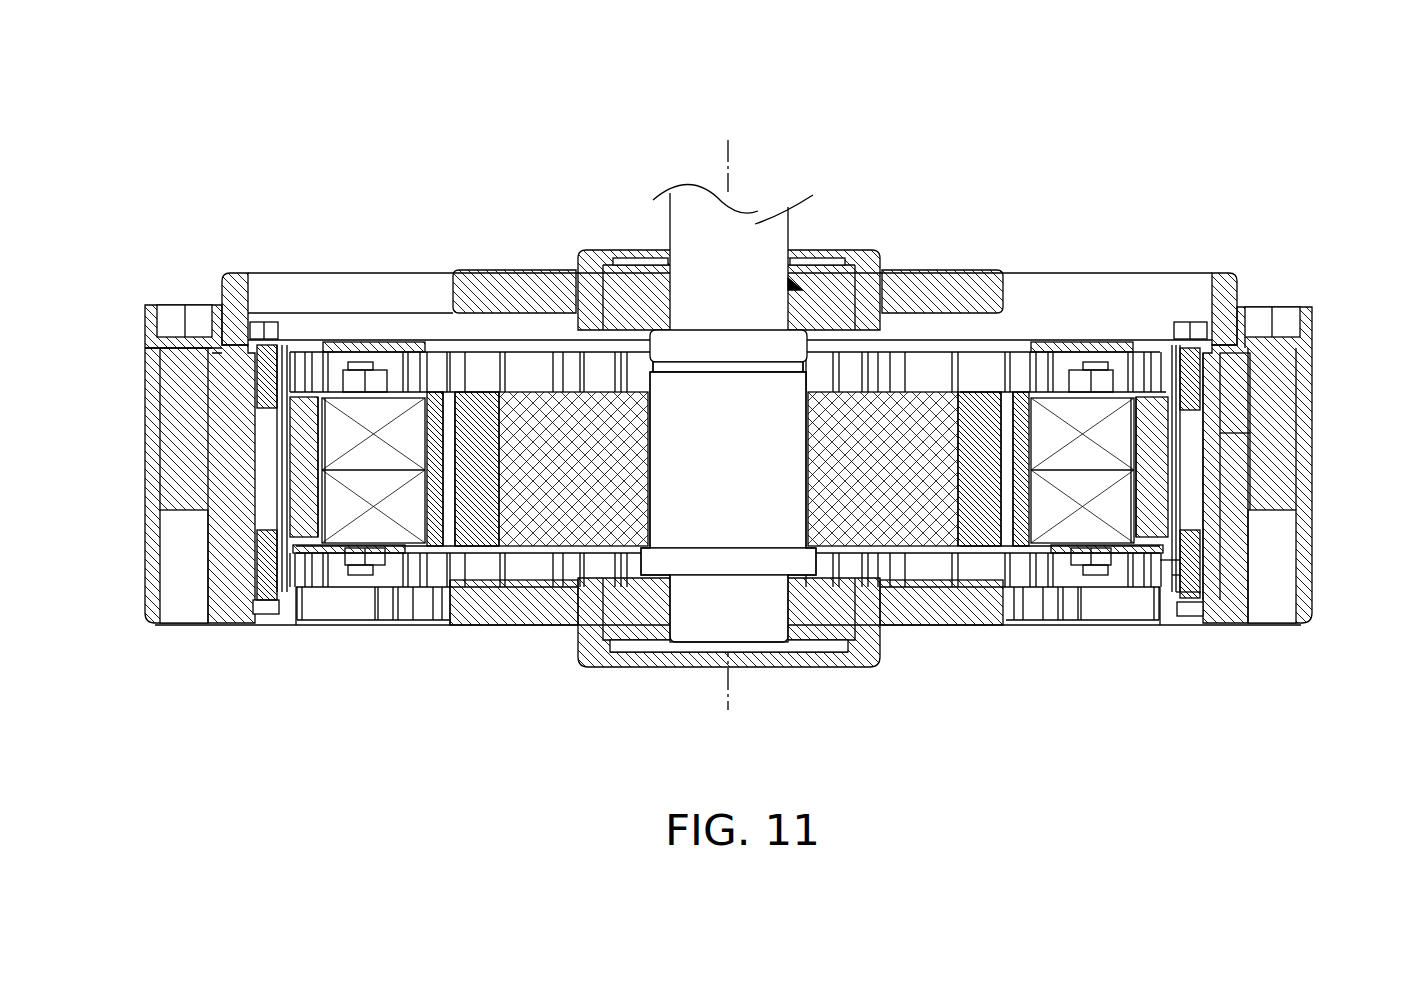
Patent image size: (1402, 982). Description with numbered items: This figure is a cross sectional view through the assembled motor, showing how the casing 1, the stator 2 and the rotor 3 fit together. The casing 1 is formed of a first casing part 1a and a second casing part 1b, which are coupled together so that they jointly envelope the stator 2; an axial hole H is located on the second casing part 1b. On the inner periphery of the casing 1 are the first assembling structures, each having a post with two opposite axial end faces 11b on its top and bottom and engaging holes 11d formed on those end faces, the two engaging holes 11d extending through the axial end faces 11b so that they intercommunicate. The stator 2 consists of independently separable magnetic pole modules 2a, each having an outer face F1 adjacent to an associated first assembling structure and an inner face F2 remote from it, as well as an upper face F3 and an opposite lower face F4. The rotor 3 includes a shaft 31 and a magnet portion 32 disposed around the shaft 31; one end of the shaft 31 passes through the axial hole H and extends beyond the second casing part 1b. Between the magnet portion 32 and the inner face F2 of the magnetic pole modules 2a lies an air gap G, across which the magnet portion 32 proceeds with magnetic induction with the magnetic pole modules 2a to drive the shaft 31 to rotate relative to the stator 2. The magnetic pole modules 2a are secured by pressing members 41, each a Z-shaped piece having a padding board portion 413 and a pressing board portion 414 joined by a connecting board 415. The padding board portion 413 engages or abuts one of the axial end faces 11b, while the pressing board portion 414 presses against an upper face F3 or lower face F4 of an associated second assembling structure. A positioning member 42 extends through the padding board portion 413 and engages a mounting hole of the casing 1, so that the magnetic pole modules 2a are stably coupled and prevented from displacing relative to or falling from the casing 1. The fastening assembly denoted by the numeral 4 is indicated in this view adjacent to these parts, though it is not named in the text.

The casing 1 is at (52, 362).
The first casing part 1a is at (150, 468).
The second casing part 1b is at (150, 375).
The axial end face 11b is at (1222, 340).
The engaging hole 11d is at (1200, 386).
The stator 2 is at (432, 318).
The magnetic pole module 2a is at (371, 328).
The rotor 3 is at (928, 372).
The shaft 31 is at (783, 216).
The magnet portion 32 is at (477, 398).
The circuit board 4 is at (1174, 305).
The pressing member 41 is at (1180, 710).
The padding board portion 413 is at (1176, 594).
The pressing board portion 414 is at (1158, 562).
The connecting board 415 is at (1168, 576).
The positioning member 42 is at (1195, 565).
The outer face F1 is at (270, 400).
The inner face F2 is at (470, 530).
The upper face F3 is at (345, 375).
The lower face F4 is at (330, 555).
The air gap G is at (1003, 527).
The axial hole H is at (792, 285).